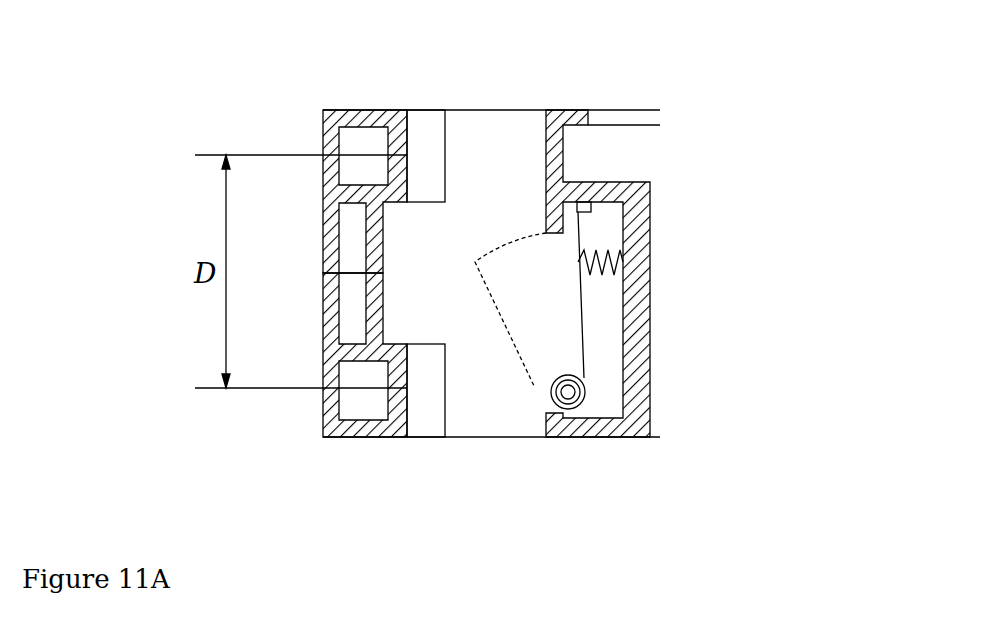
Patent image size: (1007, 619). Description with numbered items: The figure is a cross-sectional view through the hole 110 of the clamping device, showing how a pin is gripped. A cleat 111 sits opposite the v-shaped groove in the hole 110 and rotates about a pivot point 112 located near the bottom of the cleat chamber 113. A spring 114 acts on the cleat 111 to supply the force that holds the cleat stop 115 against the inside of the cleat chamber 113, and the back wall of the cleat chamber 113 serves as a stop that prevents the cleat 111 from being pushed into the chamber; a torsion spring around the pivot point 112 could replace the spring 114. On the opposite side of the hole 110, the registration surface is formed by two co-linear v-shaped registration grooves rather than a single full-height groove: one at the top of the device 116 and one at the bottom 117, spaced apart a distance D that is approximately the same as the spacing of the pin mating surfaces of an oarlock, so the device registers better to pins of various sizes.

The hole 110 is at (609, 232).
The cleat 111 is at (685, 369).
The pivot point 112 is at (723, 370).
The cleat chamber 113 is at (720, 273).
The spring 114 is at (736, 221).
The cleat stop 115 is at (736, 149).
The v-shaped registration groove at the top 116 is at (282, 150).
The v-shaped registration groove at the bottom 117 is at (282, 400).